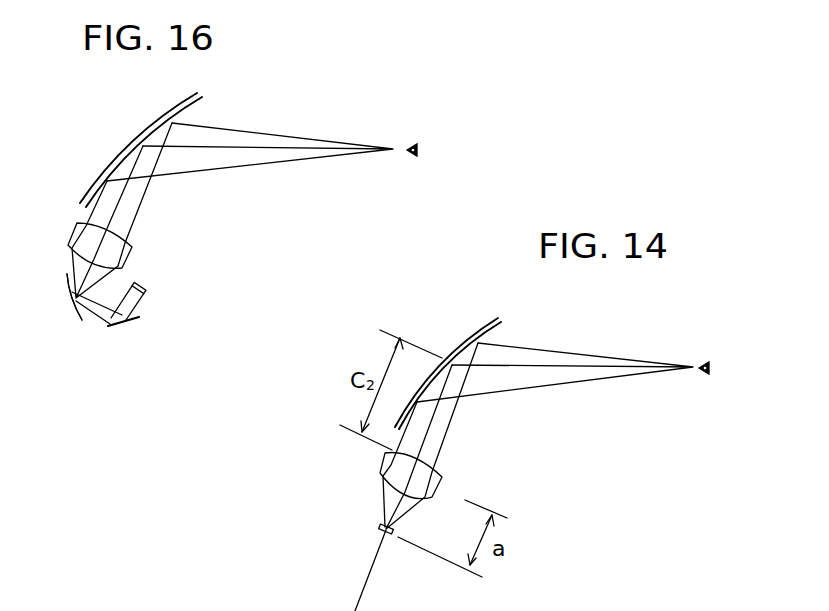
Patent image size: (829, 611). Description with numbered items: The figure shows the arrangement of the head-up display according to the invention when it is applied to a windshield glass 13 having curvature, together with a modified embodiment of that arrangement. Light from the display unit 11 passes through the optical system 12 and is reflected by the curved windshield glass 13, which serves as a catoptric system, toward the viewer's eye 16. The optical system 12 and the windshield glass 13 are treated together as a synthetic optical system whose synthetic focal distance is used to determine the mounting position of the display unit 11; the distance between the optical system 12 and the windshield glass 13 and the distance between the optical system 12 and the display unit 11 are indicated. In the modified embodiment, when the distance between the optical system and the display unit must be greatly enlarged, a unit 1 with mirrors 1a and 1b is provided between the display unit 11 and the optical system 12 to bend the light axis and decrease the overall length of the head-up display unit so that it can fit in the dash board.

In FIG. 16, the prism 1 is at (27, 247).
In FIG. 16, the mirror 1a is at (125, 327).
In FIG. 16, the mirror 1b is at (77, 297).
In FIG. 16, the display unit 11 is at (145, 288).
In FIG. 14, the display unit 11 is at (395, 530).
In FIG. 16, the optical system 12 is at (115, 242).
In FIG. 14, the optical system 12 is at (438, 488).
In FIG. 16, the windshield glass 13 is at (177, 115).
In FIG. 14, the windshield glass 13 is at (482, 328).
In FIG. 16, the eye 16 is at (407, 166).
In FIG. 14, the eye 16 is at (700, 378).